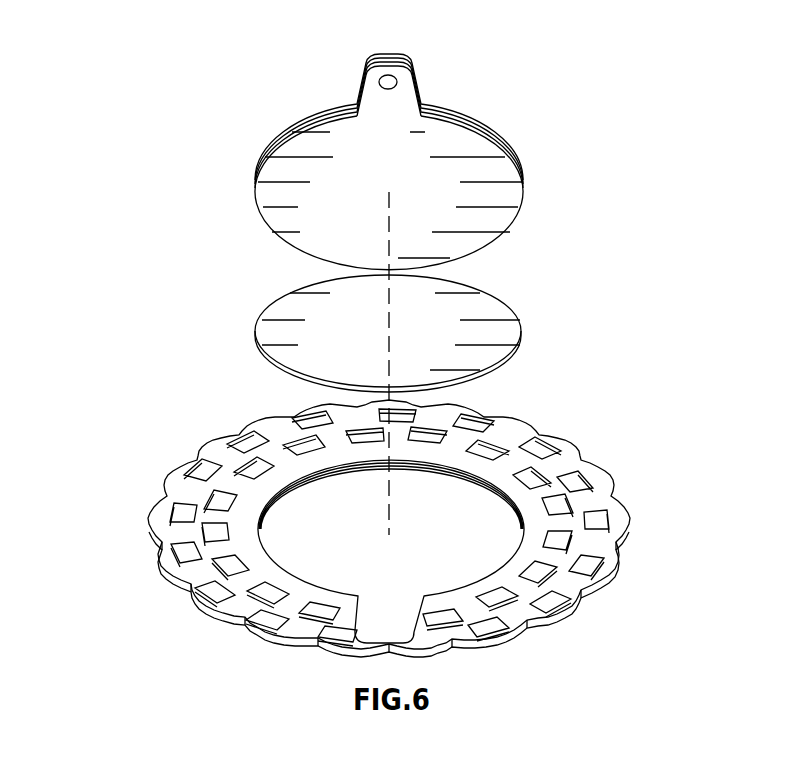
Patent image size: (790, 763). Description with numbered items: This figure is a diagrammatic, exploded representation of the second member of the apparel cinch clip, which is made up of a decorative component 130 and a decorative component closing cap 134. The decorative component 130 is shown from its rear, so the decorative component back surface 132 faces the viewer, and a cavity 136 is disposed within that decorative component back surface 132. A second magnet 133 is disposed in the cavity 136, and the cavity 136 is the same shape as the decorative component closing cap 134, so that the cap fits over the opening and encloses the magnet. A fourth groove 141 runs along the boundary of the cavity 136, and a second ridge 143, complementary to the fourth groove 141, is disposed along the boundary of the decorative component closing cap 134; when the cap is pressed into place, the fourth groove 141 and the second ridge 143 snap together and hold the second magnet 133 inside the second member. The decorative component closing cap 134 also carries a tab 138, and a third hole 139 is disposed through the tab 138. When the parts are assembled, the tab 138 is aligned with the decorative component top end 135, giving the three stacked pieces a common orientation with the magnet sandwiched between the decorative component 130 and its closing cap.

The decorative component 130 is at (150, 450).
The decorative component back surface 132 is at (195, 553).
The second magnet 133 is at (473, 328).
The decorative component closing cap 134 is at (552, 197).
The decorative component top end 135 is at (378, 660).
The cavity 136 is at (490, 515).
The tab 138 is at (413, 92).
The third hole 139 is at (395, 80).
The fourth groove 141 is at (477, 472).
The second ridge 143 is at (318, 120).